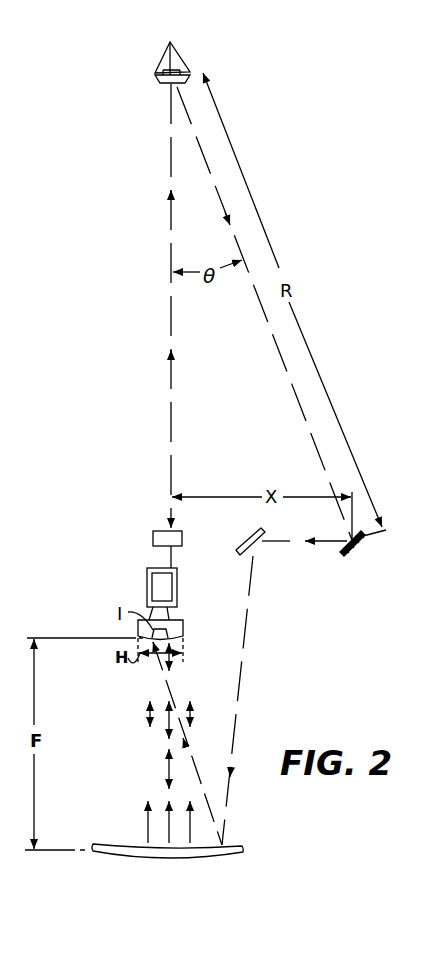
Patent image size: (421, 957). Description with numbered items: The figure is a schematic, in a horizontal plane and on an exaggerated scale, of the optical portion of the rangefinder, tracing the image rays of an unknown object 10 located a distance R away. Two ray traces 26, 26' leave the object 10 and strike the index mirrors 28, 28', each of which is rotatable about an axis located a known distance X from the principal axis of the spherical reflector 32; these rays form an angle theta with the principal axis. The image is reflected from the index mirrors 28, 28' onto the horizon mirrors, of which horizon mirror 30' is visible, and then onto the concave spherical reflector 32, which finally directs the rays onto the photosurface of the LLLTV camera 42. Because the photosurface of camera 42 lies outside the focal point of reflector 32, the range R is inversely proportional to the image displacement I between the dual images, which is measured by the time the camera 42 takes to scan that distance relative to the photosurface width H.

The unknown object 10 is at (196, 73).
The ray trace 26 is at (152, 306).
The ray trace 26' is at (264, 313).
The index mirror 28 is at (147, 544).
The index mirror 28' is at (365, 555).
The horizon mirror 30' is at (236, 681).
The LLLTV camera 42 is at (183, 630).
The spherical reflector 32 is at (210, 858).